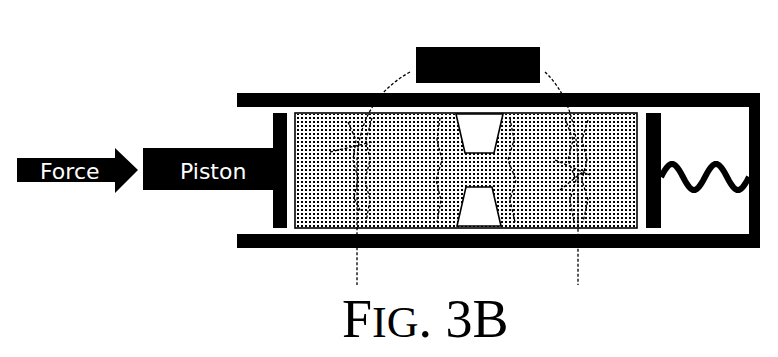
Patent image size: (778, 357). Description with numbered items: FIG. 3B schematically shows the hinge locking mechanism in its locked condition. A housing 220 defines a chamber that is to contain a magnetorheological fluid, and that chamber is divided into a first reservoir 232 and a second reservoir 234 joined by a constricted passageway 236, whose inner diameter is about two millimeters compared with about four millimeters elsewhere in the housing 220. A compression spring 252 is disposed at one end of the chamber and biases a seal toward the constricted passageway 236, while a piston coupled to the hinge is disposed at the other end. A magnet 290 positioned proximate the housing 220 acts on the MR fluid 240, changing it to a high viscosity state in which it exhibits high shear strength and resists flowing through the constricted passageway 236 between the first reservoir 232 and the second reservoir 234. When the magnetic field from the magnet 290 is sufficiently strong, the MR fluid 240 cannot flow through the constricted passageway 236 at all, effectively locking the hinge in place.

The housing 220 is at (272, 100).
The first reservoir 232 is at (613, 198).
The second reservoir 234 is at (328, 127).
The constricted passageway 236 is at (485, 177).
The MR fluid 240 is at (580, 110).
The compression spring 252 is at (698, 185).
The magnet 290 is at (487, 47).